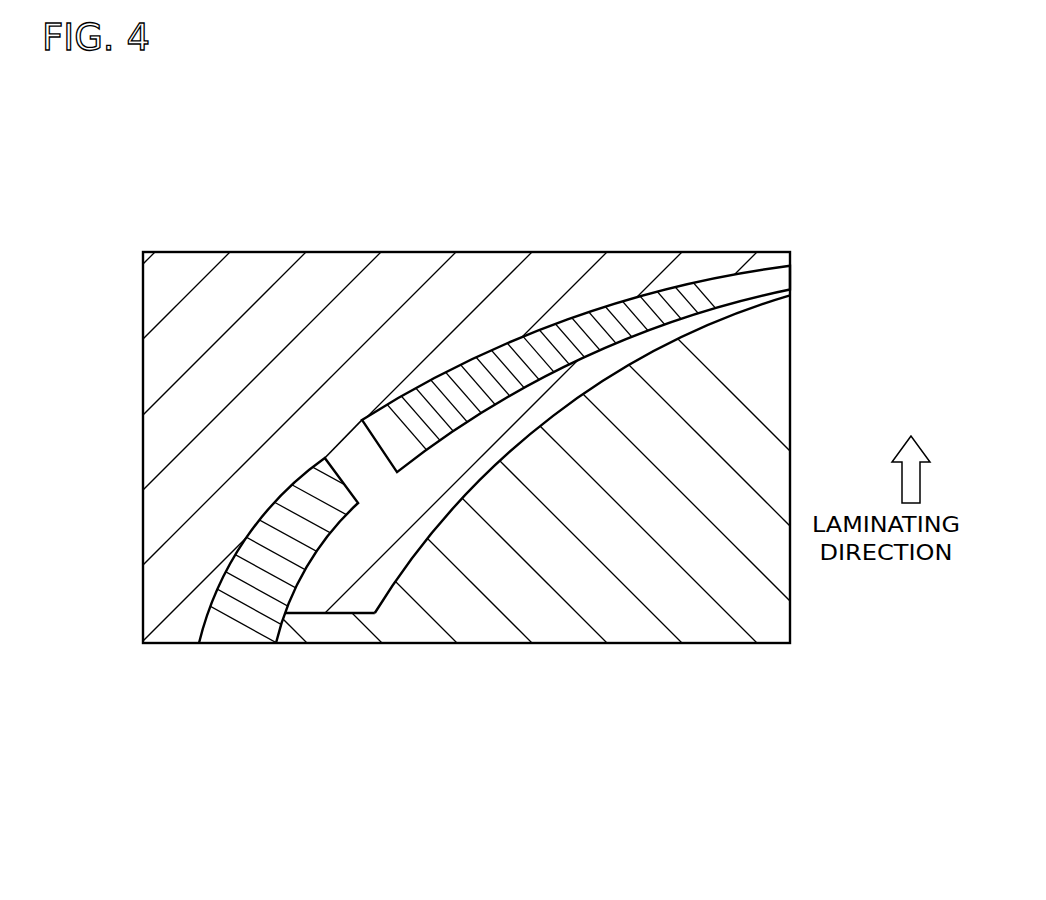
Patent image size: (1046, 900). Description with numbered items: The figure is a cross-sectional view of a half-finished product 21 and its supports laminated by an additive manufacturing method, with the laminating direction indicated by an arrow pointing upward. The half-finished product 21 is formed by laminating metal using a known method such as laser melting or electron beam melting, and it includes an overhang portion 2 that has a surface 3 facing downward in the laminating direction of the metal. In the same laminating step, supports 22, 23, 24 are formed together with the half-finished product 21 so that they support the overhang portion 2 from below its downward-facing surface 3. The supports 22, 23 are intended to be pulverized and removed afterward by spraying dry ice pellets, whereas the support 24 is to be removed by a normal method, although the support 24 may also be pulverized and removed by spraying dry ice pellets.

The overhang portion 2 is at (353, 458).
The surface 3 is at (715, 290).
The half-finished product 21 is at (270, 270).
The support 22 is at (610, 316).
The support 23 is at (250, 613).
The support 24 is at (591, 583).